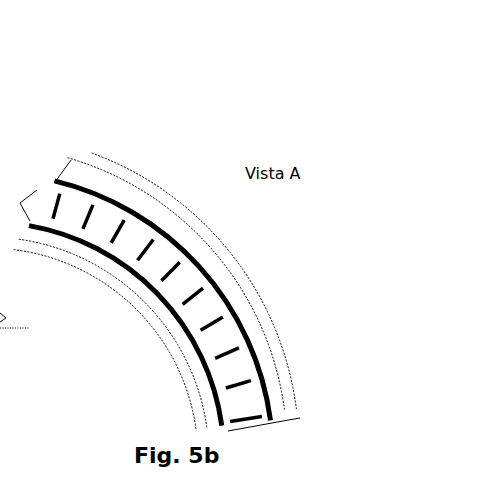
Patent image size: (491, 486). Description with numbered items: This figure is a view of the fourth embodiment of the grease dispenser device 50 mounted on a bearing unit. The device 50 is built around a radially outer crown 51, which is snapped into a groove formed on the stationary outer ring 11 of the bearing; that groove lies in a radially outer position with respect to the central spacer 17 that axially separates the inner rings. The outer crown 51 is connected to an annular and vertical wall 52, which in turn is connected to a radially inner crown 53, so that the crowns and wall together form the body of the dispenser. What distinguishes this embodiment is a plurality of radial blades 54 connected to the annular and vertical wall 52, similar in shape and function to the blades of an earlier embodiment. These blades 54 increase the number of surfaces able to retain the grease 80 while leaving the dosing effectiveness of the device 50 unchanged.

The stationary outer ring 11 is at (172, 284).
The spacer 17 is at (157, 325).
The grease dispenser device 50 is at (198, 158).
The radially outer crown 51 is at (273, 337).
The annular and vertical wall 52 is at (215, 280).
The radially inner crown 53 is at (140, 272).
The radial blades 54 is at (250, 425).
The grease 80 is at (207, 340).